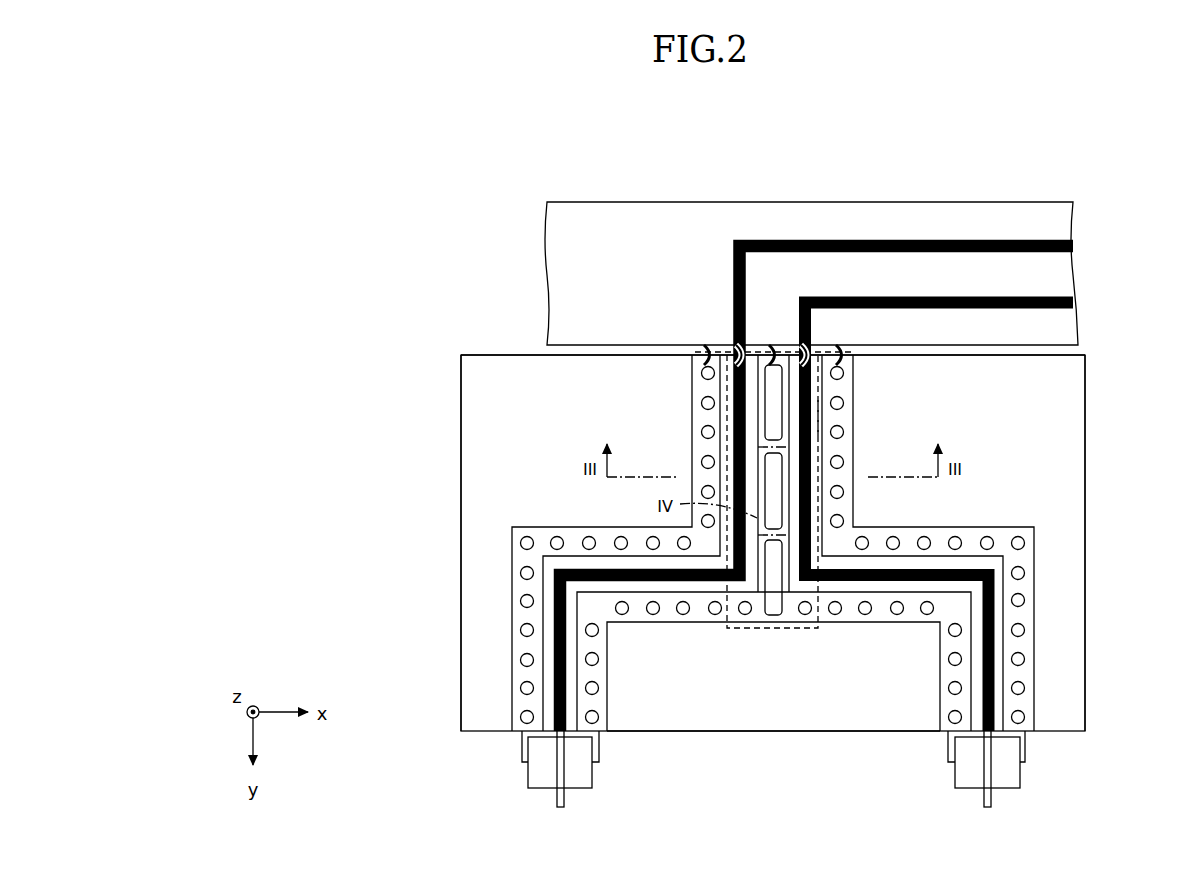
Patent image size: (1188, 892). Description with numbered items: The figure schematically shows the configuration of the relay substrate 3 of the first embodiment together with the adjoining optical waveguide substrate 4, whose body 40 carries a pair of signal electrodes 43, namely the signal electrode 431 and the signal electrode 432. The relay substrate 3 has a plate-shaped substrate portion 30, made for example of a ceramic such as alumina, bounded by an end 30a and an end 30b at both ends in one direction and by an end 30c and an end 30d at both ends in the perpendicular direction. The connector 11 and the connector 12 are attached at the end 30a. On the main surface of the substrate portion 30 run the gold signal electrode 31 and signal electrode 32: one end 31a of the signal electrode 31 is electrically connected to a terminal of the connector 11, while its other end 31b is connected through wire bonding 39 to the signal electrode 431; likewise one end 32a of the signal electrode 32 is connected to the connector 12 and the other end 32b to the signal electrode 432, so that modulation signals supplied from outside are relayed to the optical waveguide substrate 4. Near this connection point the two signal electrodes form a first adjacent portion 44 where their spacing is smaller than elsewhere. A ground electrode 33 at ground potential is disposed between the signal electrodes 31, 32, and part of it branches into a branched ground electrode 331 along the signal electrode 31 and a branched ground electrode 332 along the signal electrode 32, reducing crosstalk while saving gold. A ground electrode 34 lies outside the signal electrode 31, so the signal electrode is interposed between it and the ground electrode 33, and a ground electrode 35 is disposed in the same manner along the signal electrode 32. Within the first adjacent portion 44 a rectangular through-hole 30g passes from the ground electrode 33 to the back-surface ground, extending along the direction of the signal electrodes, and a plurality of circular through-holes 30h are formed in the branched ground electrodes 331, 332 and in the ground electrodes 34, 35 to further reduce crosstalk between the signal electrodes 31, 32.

The optical waveguide substrate 4 is at (1045, 200).
The base film of flexible wiring board 40 is at (620, 215).
The conductor wiring pair 43 is at (955, 152).
The signal electrode (third signal electrode) 431 is at (870, 240).
The signal electrode (fourth signal electrode) 432 is at (935, 297).
The relay substrate 3 is at (1088, 455).
The substrate portion 30 is at (1073, 495).
The end 30a is at (690, 735).
The end 30b is at (1030, 355).
The end 30c is at (461, 708).
The end 30d is at (1086, 700).
The through-hole 30h is at (551, 543).
The through-hole 30g is at (773, 617).
The ground electrode 34 is at (510, 648).
The ground electrode 35 is at (1036, 620).
The branched ground electrode 331 is at (607, 690).
The branched ground electrode 332 is at (940, 690).
The signal electrode 31 is at (553, 712).
The signal electrode 32 is at (995, 700).
The one end 31a is at (557, 735).
The one end 32a is at (984, 735).
The other end 31b is at (737, 345).
The other end 32b is at (803, 345).
The ground electrode 33 is at (828, 628).
The first adjacent portion 44 is at (820, 420).
The wire bonding 39 is at (702, 347).
The connector 11 is at (543, 785).
The connector 12 is at (970, 785).